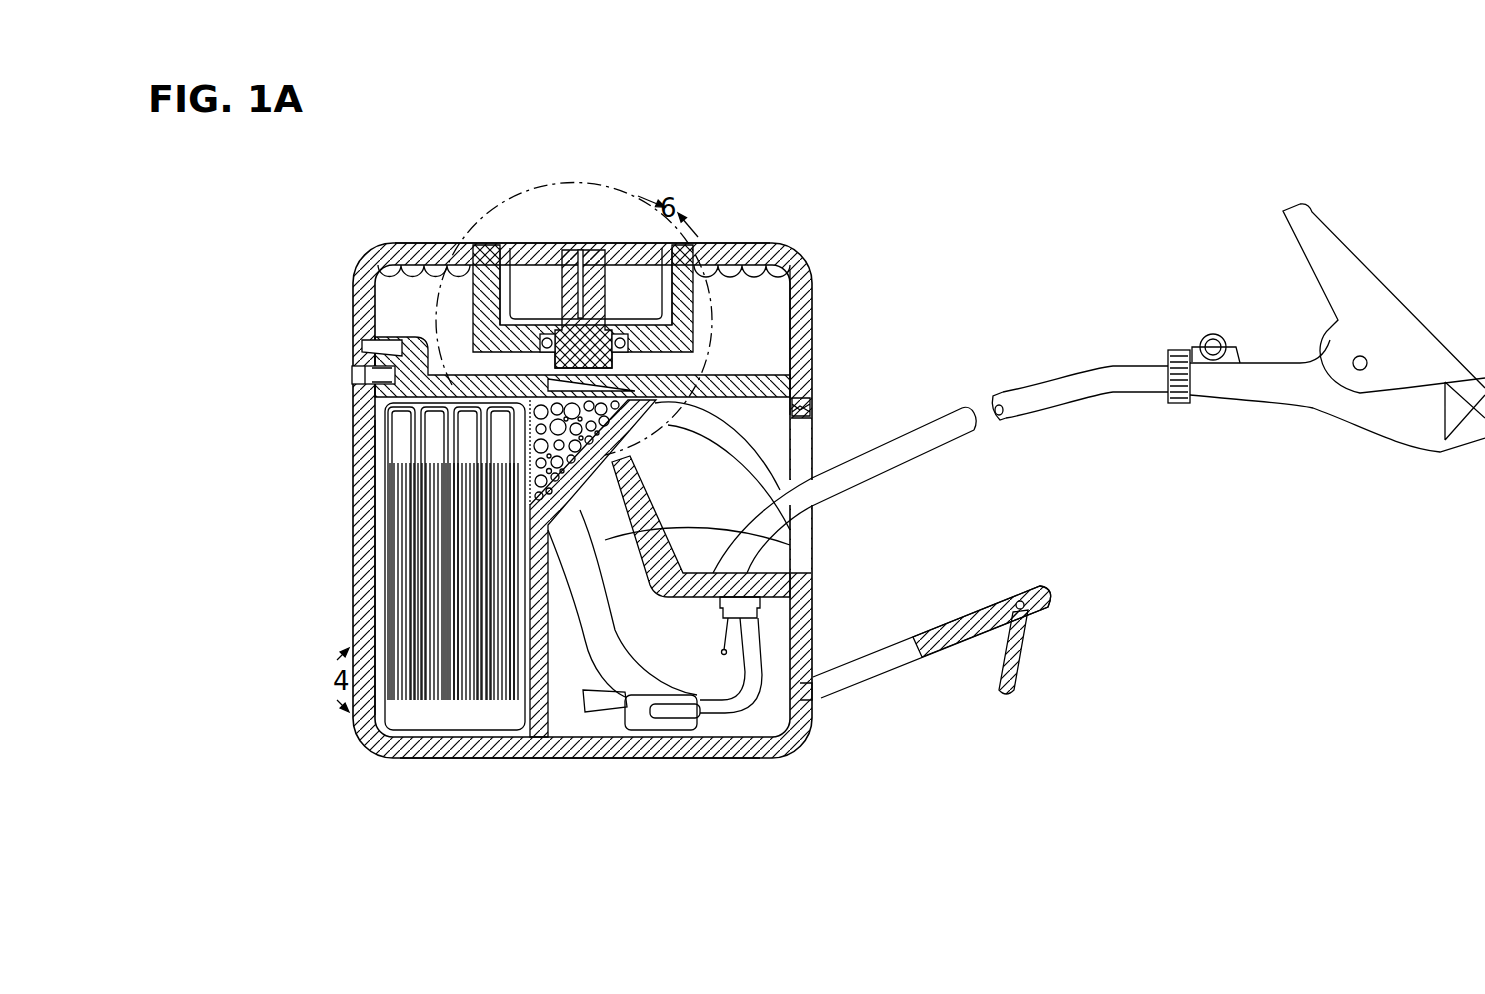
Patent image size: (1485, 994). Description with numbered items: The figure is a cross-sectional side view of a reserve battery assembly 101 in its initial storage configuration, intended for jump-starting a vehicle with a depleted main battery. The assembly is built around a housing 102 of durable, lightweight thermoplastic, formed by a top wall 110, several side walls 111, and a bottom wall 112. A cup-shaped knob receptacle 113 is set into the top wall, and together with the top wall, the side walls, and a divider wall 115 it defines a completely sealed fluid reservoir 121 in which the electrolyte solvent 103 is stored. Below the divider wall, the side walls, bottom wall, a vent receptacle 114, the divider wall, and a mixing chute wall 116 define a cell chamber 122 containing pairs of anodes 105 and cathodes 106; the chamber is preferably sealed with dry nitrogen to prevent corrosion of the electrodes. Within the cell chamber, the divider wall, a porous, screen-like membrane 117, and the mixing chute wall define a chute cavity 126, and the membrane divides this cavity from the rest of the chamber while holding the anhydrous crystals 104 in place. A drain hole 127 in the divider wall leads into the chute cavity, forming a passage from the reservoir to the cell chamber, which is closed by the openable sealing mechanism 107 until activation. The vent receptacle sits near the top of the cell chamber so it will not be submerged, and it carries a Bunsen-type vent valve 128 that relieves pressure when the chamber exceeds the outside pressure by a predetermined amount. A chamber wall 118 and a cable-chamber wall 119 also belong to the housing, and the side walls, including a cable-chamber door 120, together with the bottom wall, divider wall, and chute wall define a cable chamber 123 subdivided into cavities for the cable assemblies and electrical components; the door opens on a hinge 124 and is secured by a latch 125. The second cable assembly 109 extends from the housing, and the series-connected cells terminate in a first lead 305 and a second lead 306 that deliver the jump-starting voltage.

The reserve battery assembly 101 is at (898, 172).
The housing 102 is at (420, 700).
The electrolyte solvent 103 is at (428, 302).
The anhydrous crystals 104 is at (527, 488).
The anodes 105 is at (455, 700).
The cathodes 106 is at (487, 690).
The openable sealing mechanism 107 is at (570, 290).
The second cable assembly 109 is at (945, 425).
The top wall 110 is at (747, 243).
The side walls 111 is at (805, 292).
The bottom wall 112 is at (735, 748).
The cup-shaped knob receptacle 113 is at (655, 295).
The vent receptacle 114 is at (355, 352).
The divider wall 115 is at (765, 387).
The mixing chute wall 116 is at (800, 503).
The porous screen-like membrane 117 is at (520, 472).
The chamber wall 118 is at (555, 683).
The cable-chamber wall 119 is at (765, 540).
The cable-chamber door 120 is at (872, 667).
The fluid reservoir 121 is at (795, 255).
The cell chamber 122 is at (378, 433).
The cable chamber 123 is at (795, 433).
The hinge 124 is at (818, 700).
The latch 125 is at (1015, 667).
The chute cavity 126 is at (500, 275).
The drain hole 127 is at (700, 368).
The vent valve 128 is at (352, 377).
The first lead 305 is at (703, 645).
The second lead 306 is at (765, 655).